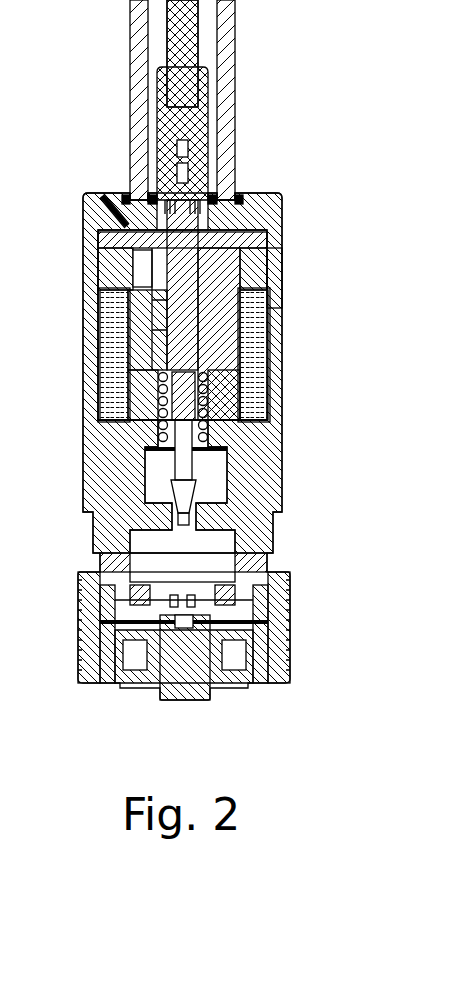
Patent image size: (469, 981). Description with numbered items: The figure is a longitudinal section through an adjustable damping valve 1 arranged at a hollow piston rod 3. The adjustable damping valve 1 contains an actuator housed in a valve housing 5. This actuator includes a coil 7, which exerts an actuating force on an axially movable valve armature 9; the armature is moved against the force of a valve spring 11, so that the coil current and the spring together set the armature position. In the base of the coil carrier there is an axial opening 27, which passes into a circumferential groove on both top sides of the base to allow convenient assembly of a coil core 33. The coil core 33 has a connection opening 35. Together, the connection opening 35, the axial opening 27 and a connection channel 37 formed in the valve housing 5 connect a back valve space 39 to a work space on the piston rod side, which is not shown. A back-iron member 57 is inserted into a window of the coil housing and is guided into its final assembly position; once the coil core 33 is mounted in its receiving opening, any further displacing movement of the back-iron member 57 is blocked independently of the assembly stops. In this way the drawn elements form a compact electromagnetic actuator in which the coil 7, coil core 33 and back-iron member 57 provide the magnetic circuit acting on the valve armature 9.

The adjustable damping valve 1 is at (20, 780).
The hollow piston rod 3 is at (226, 63).
The valve housing 5 is at (278, 513).
The coil 7 is at (249, 353).
The valve armature 9 is at (214, 402).
The valve spring 11 is at (203, 428).
The axial opening 27 is at (142, 240).
The coil core 33 is at (212, 262).
The connection opening 35 is at (145, 270).
The connection channel 37 is at (102, 196).
The back valve space 39 is at (226, 316).
The back-iron member 57 is at (255, 272).